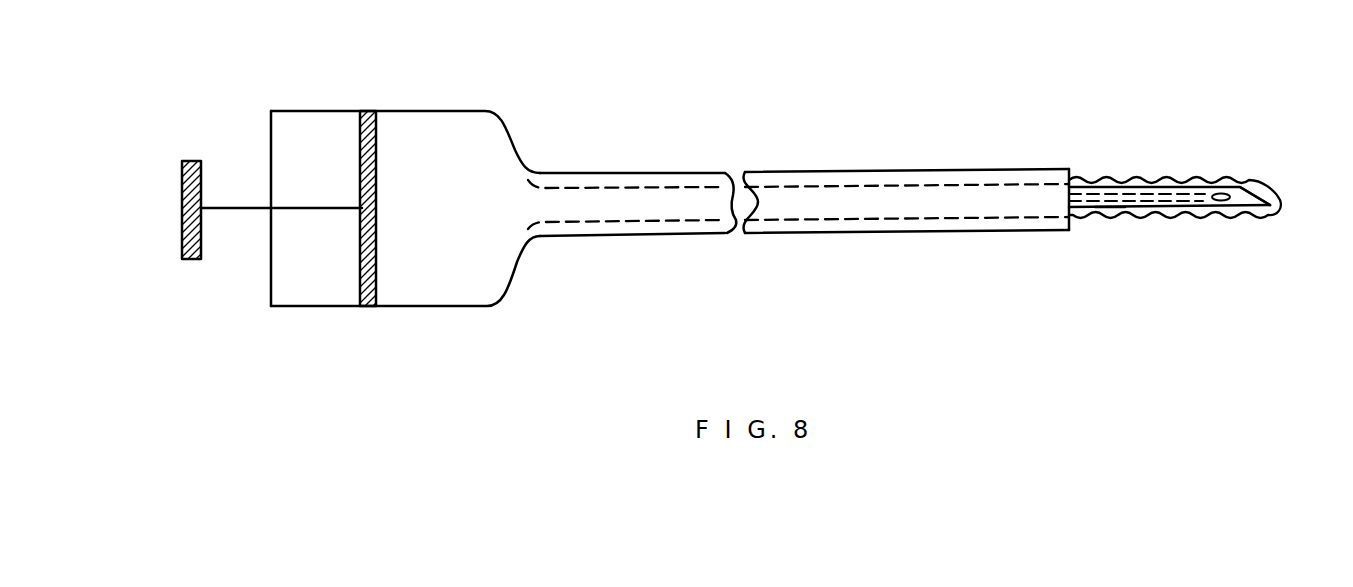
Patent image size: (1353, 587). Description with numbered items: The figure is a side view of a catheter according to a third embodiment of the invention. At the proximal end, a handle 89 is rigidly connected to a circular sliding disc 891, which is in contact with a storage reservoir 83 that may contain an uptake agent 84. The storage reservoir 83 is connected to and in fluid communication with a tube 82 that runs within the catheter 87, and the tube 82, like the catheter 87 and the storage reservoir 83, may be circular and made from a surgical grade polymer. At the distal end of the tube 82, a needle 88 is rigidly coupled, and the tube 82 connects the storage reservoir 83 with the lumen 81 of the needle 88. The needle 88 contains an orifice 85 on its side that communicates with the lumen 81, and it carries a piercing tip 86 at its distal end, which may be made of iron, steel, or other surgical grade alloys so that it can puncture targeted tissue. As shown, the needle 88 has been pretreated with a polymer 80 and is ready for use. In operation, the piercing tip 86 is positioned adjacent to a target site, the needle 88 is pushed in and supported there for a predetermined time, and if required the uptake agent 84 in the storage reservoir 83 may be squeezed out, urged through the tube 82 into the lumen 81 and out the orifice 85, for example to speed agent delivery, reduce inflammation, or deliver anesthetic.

The polymer 80 is at (1186, 223).
The lumen 81 is at (1180, 193).
The tube 82 is at (612, 233).
The storage reservoir 83 is at (404, 307).
The uptake agent 84 is at (405, 208).
The orifice 85 is at (1230, 200).
The piercing tip 86 is at (1262, 192).
The catheter 87 is at (850, 168).
The needle 88 is at (1110, 210).
The handle 89 is at (182, 233).
The circular sliding disc 891 is at (370, 111).